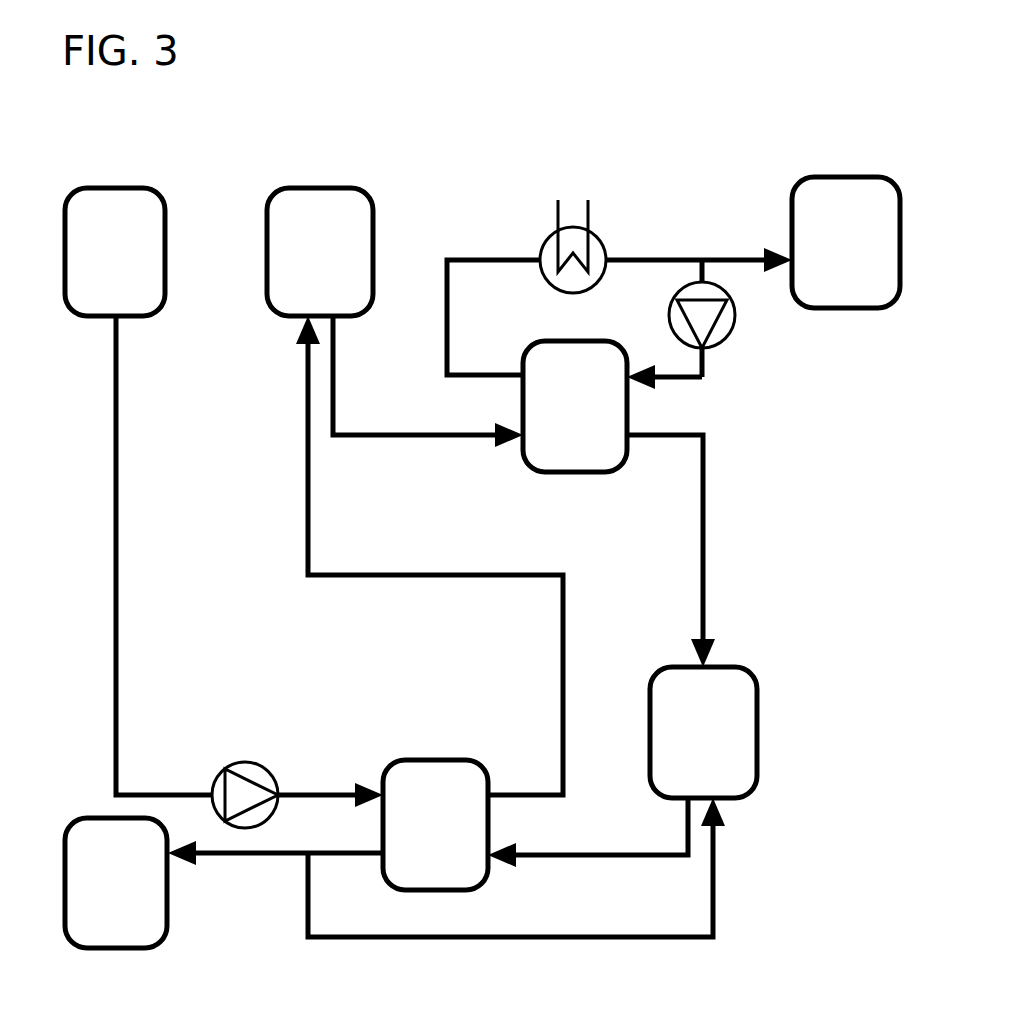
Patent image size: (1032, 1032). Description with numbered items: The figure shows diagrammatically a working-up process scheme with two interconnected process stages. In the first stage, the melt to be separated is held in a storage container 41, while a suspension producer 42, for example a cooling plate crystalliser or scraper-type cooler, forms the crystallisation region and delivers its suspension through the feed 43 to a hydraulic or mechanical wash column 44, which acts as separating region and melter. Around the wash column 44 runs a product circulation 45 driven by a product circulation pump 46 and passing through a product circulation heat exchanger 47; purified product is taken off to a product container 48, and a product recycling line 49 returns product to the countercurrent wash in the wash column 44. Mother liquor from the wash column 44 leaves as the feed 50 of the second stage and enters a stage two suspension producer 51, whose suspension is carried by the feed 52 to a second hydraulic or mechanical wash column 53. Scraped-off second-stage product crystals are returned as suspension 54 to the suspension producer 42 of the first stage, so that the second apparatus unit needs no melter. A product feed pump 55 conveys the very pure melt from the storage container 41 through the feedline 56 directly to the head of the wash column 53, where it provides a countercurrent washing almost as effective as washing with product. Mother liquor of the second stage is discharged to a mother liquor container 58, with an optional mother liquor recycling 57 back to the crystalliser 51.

The storage container 41 is at (115, 252).
The suspension producer 42 is at (320, 252).
The feed 43 is at (458, 430).
The hydraulic or mechanical wash column 44 is at (575, 406).
The product circulation 45 is at (470, 257).
The product circulation pump 46 is at (730, 332).
The product circulation heat exchanger 47 is at (603, 248).
The product container 48 is at (846, 242).
The product recycling 49 is at (692, 378).
The feed of the second stage 50 is at (695, 620).
The stage 2 suspension producer 51 is at (703, 732).
The feed 52 is at (565, 850).
The hydraulic or mechanical wash column 53 is at (435, 825).
The product from the second stage 54 is at (560, 758).
The product feed pump 55 is at (230, 772).
The feedline 56 is at (118, 472).
The mother liquor recycling 57 is at (482, 938).
The mother liquor container of the second stage 58 is at (116, 883).